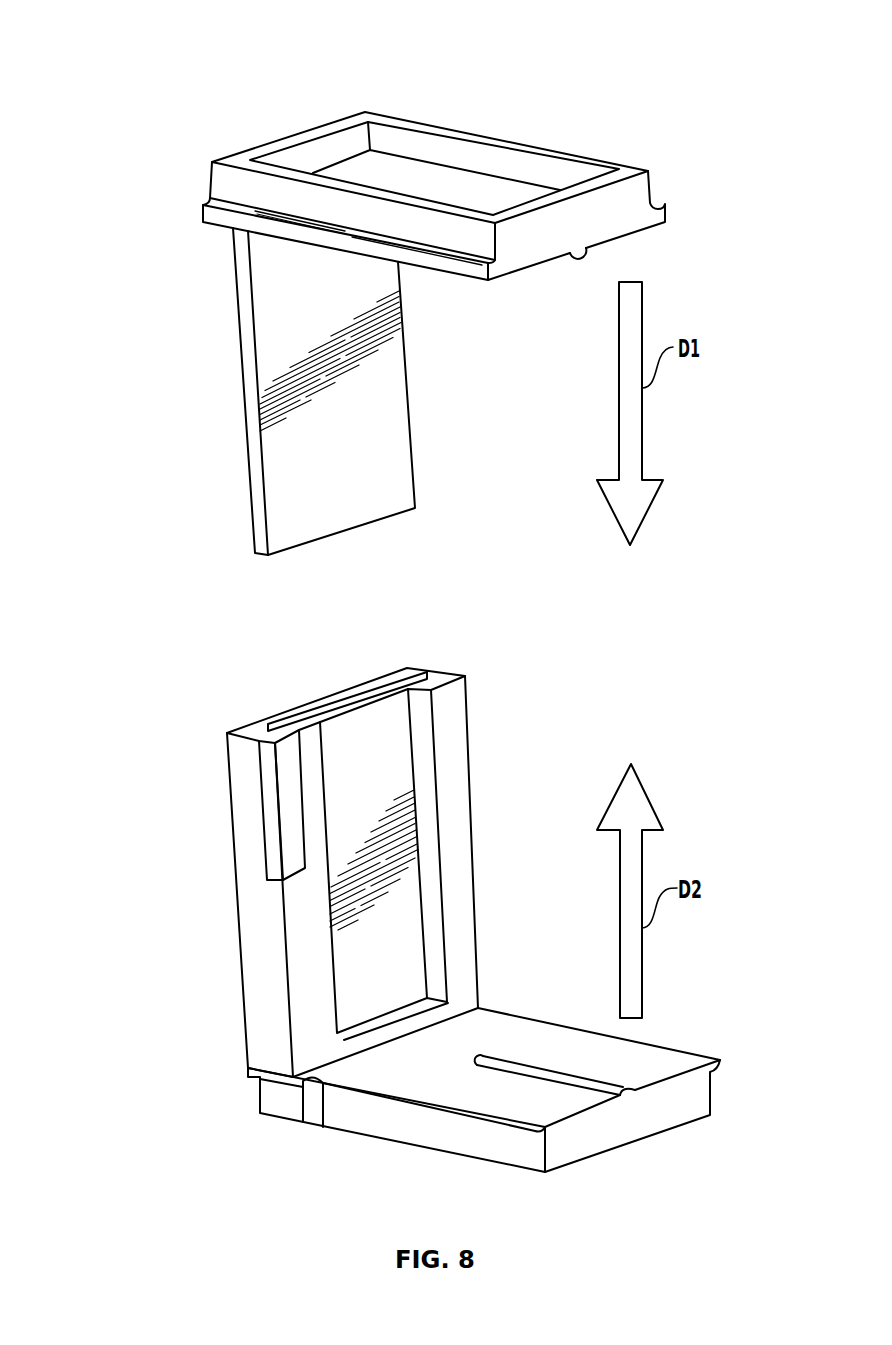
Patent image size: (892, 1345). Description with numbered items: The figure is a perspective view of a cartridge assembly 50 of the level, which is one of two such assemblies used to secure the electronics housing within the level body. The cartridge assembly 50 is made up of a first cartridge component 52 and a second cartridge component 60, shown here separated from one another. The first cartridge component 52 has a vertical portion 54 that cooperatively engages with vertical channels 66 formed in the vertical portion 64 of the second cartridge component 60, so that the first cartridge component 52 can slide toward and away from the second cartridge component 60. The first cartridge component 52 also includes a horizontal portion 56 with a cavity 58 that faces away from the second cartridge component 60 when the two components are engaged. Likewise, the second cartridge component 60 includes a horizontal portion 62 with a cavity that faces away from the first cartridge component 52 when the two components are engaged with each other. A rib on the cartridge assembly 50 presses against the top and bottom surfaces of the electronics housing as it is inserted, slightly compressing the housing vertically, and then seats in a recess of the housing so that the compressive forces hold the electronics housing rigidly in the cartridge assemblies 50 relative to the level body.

The cartridge assembly 50 is at (190, 98).
The first cartridge component 52 is at (133, 203).
The vertical portion 54 is at (232, 400).
The horizontal portion 56 is at (668, 183).
The cavity 58 is at (455, 180).
The second cartridge component 60 is at (128, 780).
The horizontal portion 62 is at (737, 1078).
The vertical portion 64 is at (232, 942).
The vertical channels 66 is at (397, 668).